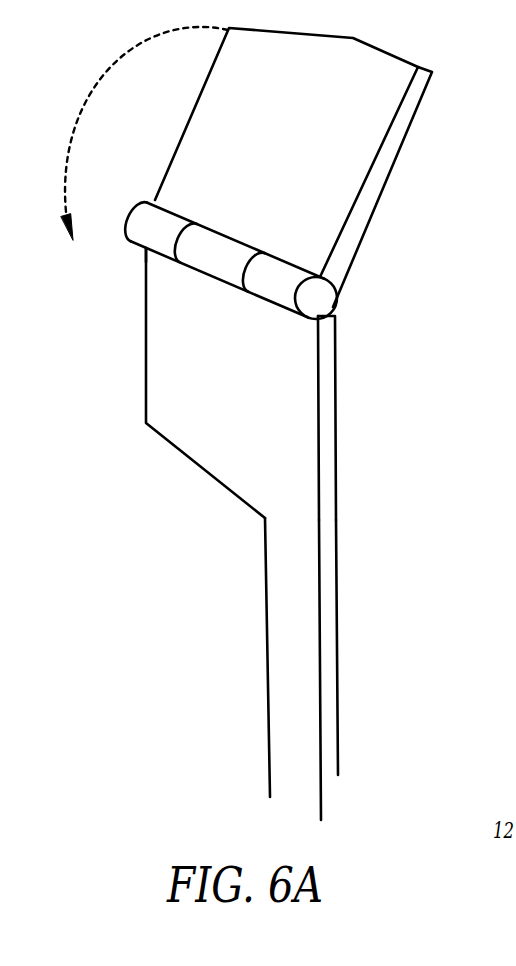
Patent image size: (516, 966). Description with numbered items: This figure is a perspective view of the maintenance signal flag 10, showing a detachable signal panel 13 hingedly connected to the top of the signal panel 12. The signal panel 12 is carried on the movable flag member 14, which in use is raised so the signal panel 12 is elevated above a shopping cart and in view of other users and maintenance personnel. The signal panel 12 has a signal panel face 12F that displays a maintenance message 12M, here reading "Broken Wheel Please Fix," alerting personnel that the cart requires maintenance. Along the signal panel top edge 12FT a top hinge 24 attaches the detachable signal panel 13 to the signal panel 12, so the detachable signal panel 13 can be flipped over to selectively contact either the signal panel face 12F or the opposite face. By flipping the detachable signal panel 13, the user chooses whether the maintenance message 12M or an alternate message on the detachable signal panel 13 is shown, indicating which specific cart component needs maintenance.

The maintenance signal flag 10 is at (263, 423).
The signal panel 12 is at (247, 533).
The signal panel face 12F is at (235, 383).
The signal panel top edge 12FT is at (145, 247).
The maintenance message 12M is at (163, 368).
The detachable signal panel 13 is at (387, 138).
The flag member 14 is at (307, 610).
The top hinge 24 is at (334, 309).